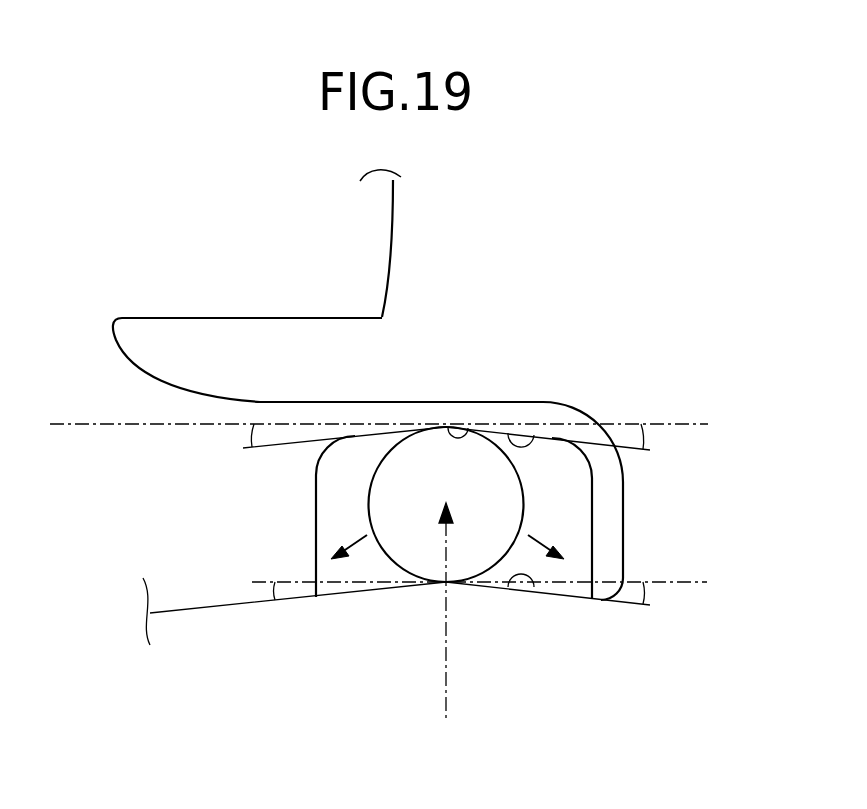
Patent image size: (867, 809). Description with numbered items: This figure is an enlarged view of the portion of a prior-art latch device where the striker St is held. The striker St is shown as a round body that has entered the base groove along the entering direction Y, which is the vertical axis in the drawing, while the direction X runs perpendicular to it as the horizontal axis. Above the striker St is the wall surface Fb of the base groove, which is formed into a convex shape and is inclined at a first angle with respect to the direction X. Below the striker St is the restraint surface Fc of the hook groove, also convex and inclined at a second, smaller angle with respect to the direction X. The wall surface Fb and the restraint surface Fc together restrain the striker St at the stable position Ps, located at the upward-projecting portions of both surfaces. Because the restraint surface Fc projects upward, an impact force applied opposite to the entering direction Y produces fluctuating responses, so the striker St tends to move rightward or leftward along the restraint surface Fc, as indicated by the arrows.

The direction X is at (96, 422).
The entering direction Y is at (446, 687).
The striker St is at (413, 545).
The stable position Ps is at (449, 428).
The wall surface Fb is at (534, 431).
The restraint surface Fc is at (533, 589).